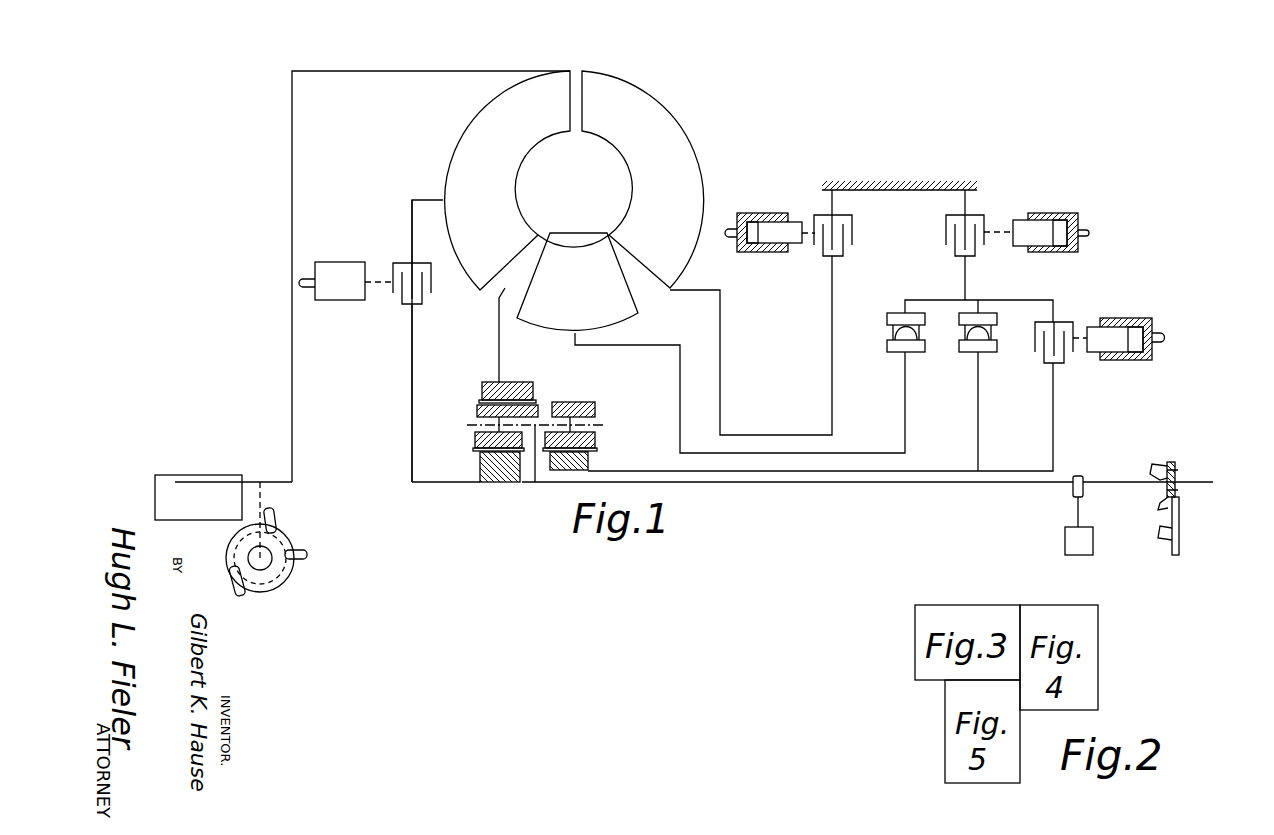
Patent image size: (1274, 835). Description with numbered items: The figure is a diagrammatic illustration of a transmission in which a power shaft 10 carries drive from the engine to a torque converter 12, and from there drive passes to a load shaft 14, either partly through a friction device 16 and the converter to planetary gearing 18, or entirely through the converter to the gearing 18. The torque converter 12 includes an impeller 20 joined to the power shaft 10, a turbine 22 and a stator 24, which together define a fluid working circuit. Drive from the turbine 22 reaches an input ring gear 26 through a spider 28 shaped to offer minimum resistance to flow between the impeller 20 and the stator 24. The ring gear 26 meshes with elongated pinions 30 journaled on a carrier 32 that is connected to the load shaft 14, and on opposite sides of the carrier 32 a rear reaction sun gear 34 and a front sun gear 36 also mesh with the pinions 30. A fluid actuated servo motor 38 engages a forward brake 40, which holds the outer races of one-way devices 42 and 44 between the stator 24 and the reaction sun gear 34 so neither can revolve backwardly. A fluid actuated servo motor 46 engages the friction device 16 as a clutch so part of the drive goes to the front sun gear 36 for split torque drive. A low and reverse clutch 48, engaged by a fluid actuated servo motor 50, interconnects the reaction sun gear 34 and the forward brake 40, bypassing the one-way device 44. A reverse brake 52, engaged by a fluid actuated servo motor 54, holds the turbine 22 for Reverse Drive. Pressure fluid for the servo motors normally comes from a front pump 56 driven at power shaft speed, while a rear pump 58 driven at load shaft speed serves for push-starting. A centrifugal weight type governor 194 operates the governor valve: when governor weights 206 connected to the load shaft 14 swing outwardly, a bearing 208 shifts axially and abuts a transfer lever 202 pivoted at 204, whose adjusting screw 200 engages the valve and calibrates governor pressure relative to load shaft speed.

The power shaft 10 is at (203, 476).
The torque converter 12 is at (588, 180).
The load shaft 14 is at (898, 483).
The friction device 16 is at (399, 296).
The planetary gearing 18 is at (468, 426).
The impeller 20 is at (447, 178).
The turbine 22 is at (662, 106).
The stator 24 is at (637, 308).
The input ring gear 26 is at (533, 383).
The spider 28 is at (498, 293).
The elongated pinions 30 is at (596, 410).
The carrier 32 is at (531, 483).
The rear reaction sun gear 34 is at (588, 458).
The front sun gear 36 is at (490, 483).
The fluid actuated servo motor 38 is at (1040, 213).
The forward brake 40 is at (952, 216).
The one-way device 42 is at (893, 340).
The one-way device 44 is at (965, 340).
The fluid actuated servo motor 46 is at (347, 258).
The low and reverse clutch 48 is at (1062, 322).
The fluid actuated servo motor 50 is at (1125, 318).
The reverse brake 52 is at (852, 232).
The fluid actuated servo motor 54 is at (760, 211).
The front pump 56 is at (290, 519).
The rear pump 58 is at (1093, 535).
The centrifugal weight type governor 194 is at (1175, 465).
The adjusting screw 200 is at (1180, 545).
The transfer lever 202 is at (1180, 515).
The pivot 204 is at (1167, 538).
The governor weights 206 is at (1156, 450).
The bearing 208 is at (1177, 478).